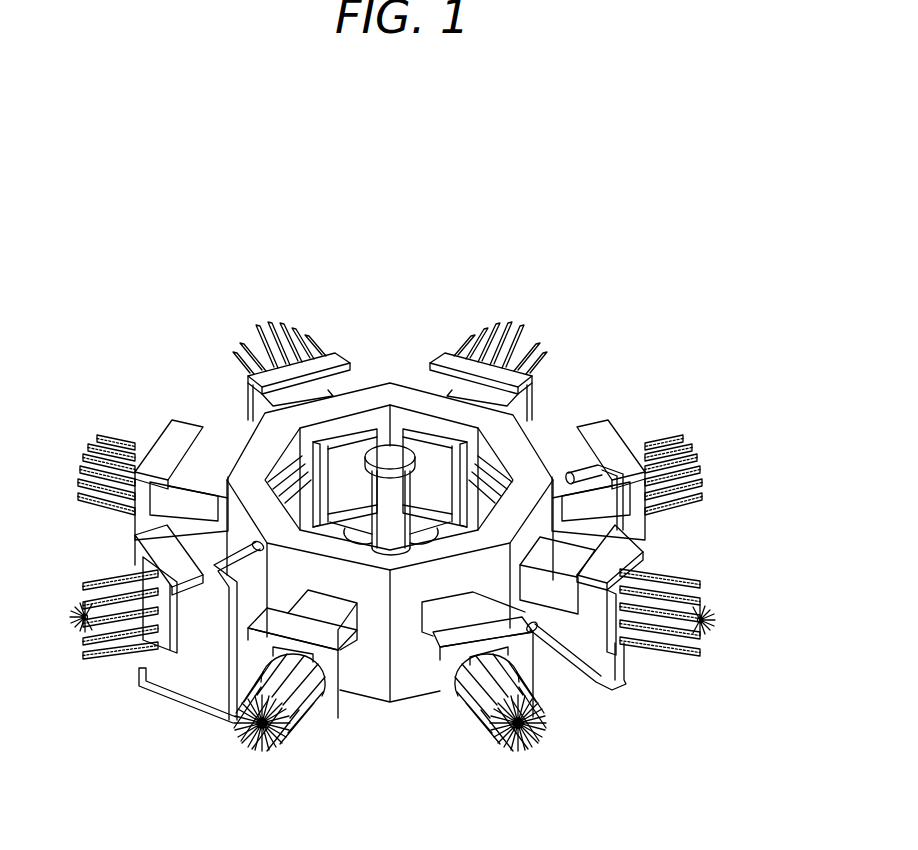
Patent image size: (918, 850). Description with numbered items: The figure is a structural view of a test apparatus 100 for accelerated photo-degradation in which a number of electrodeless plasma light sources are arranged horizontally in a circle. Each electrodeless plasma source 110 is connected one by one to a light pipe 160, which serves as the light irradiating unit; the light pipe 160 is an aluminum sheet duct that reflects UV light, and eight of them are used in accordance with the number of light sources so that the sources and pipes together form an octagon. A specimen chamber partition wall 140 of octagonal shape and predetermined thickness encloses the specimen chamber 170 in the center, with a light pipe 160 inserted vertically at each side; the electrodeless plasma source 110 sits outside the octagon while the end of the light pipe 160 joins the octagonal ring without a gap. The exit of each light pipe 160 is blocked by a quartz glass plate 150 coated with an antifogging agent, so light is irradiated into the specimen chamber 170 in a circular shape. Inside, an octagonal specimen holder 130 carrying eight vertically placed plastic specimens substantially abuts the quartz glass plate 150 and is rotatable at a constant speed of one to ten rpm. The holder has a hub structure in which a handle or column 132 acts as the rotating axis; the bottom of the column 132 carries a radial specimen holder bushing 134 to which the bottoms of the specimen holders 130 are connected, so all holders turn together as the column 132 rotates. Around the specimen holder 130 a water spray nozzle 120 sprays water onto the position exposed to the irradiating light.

The test apparatus 100 is at (486, 274).
The electrodeless plasma source 110 is at (709, 497).
The water spray nozzle 120 is at (608, 440).
The specimen holder 130 is at (432, 450).
The column 132 is at (398, 486).
The specimen holder bushing 134 is at (423, 533).
The specimen chamber partition wall 140 is at (412, 676).
The quartz glass plate 150 is at (336, 480).
The light pipe 160 is at (207, 462).
The specimen chamber 170 is at (358, 489).